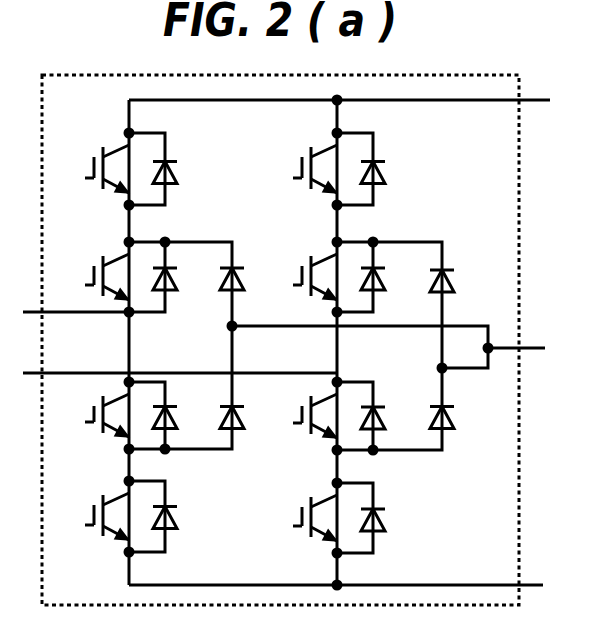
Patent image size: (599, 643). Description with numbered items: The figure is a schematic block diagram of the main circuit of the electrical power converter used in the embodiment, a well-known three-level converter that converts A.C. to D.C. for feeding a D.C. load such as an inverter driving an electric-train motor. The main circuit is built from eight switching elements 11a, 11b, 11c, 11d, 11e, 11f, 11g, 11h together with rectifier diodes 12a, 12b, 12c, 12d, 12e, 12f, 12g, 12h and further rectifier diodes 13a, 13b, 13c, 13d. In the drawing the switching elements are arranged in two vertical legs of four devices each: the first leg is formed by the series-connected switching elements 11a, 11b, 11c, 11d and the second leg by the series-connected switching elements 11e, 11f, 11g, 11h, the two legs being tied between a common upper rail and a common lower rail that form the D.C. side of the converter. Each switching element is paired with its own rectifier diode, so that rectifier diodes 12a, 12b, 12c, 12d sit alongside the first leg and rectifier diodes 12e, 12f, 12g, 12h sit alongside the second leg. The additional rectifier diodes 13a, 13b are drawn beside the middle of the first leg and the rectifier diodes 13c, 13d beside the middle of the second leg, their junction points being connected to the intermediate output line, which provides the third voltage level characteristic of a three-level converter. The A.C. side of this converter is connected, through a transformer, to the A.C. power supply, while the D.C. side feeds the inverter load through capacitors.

The switching element 11a is at (97, 147).
The switching element 11b is at (98, 257).
The switching element 11c is at (95, 407).
The switching element 11d is at (93, 532).
The switching element 11e is at (306, 148).
The switching element 11f is at (306, 257).
The switching element 11g is at (307, 425).
The switching element 11h is at (297, 530).
The rectifier diode 12a is at (181, 167).
The rectifier diode 12b is at (182, 284).
The rectifier diode 12c is at (182, 424).
The rectifier diode 12d is at (182, 524).
The rectifier diode 12e is at (391, 167).
The rectifier diode 12f is at (391, 284).
The rectifier diode 12g is at (390, 425).
The rectifier diode 12h is at (390, 527).
The rectifier diode 13a is at (247, 284).
The rectifier diode 13b is at (238, 432).
The rectifier diode 13c is at (459, 284).
The rectifier diode 13d is at (461, 426).